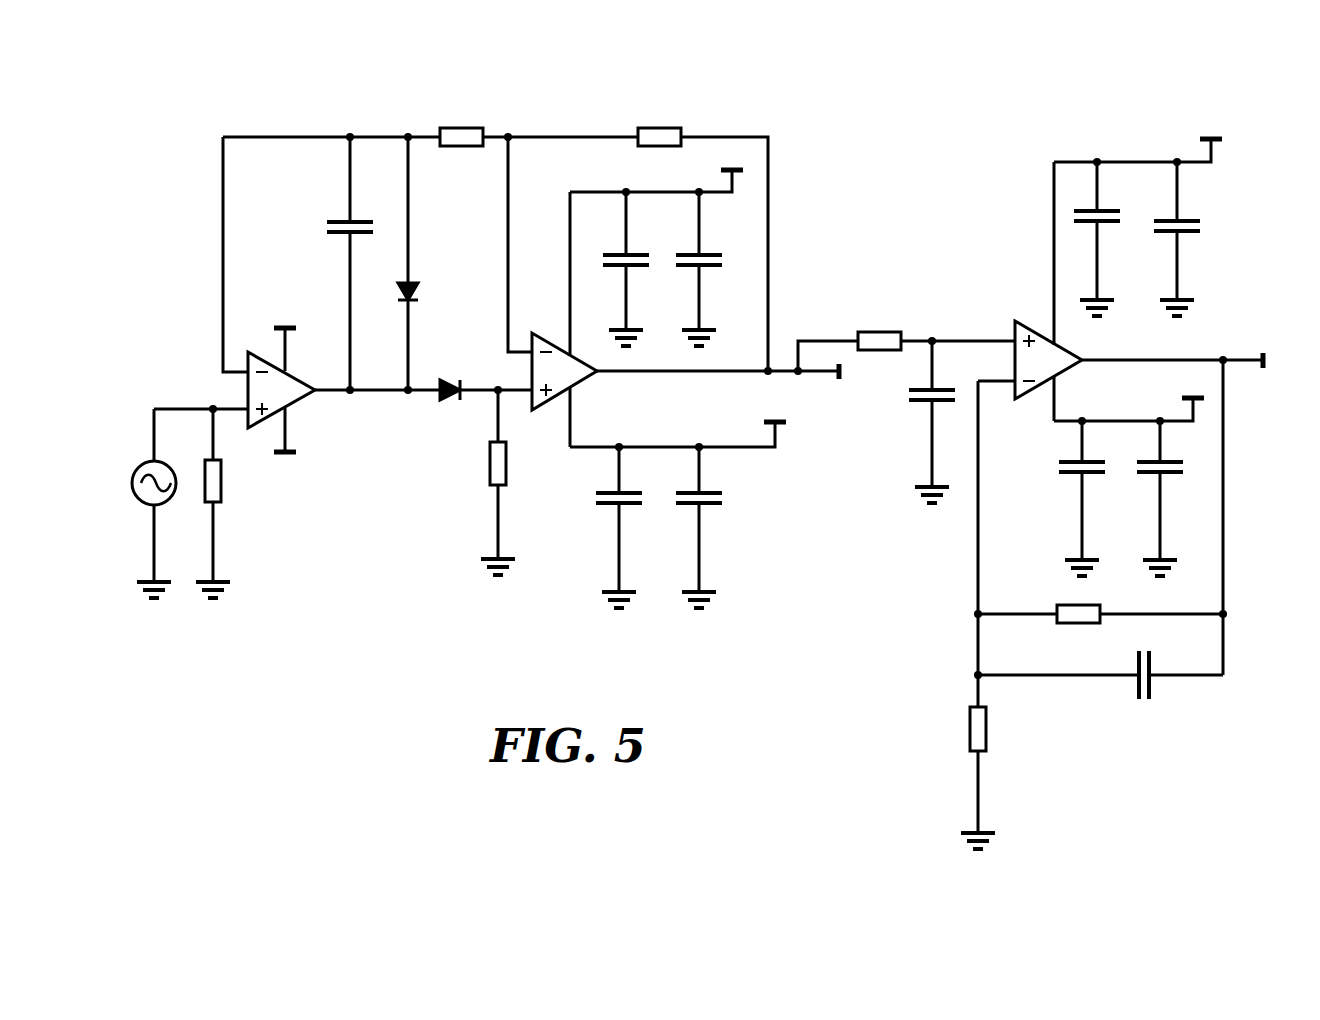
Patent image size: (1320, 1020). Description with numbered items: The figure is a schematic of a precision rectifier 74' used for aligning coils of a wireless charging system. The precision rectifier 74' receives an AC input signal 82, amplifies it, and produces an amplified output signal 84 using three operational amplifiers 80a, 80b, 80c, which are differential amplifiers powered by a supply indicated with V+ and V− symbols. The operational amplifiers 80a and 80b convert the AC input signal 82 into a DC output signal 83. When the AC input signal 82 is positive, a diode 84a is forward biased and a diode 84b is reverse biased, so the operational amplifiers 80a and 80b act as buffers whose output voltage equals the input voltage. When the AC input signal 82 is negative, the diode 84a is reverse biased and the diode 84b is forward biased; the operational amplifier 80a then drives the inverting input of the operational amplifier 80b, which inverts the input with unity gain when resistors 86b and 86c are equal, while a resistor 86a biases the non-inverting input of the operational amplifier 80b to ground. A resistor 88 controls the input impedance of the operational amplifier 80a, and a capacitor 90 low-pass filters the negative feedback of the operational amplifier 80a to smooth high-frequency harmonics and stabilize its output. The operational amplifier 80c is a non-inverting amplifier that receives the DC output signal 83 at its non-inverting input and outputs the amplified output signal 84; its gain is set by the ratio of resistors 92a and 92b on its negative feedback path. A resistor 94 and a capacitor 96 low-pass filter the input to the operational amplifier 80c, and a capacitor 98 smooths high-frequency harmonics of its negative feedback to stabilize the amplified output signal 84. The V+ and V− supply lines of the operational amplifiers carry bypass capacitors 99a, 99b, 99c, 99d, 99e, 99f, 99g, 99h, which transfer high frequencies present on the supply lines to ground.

The precision rectifier 74' is at (710, 439).
The operational amplifier 80a is at (260, 362).
The operational amplifier 80b is at (542, 342).
The operational amplifier 80c is at (1022, 333).
The AC input signal 82 is at (142, 464).
The DC output signal 83 is at (843, 377).
The amplified output signal 84 is at (1266, 352).
The diode 84a is at (448, 384).
The diode 84b is at (414, 284).
The resistor 86a is at (507, 467).
The resistor 86b is at (658, 128).
The resistor 86c is at (458, 128).
The resistor 88 is at (222, 478).
The capacitor 90 is at (336, 220).
The resistor 92a is at (1076, 624).
The resistor 92b is at (968, 730).
The resistor 94 is at (878, 332).
The capacitor 96 is at (938, 389).
The capacitor 98 is at (1154, 664).
The bypass capacitor 99a is at (632, 254).
The bypass capacitor 99b is at (706, 254).
The bypass capacitor 99c is at (630, 492).
The bypass capacitor 99d is at (709, 492).
The bypass capacitor 99e is at (1104, 210).
The bypass capacitor 99f is at (1186, 220).
The bypass capacitor 99g is at (1075, 460).
The bypass capacitor 99h is at (1156, 460).